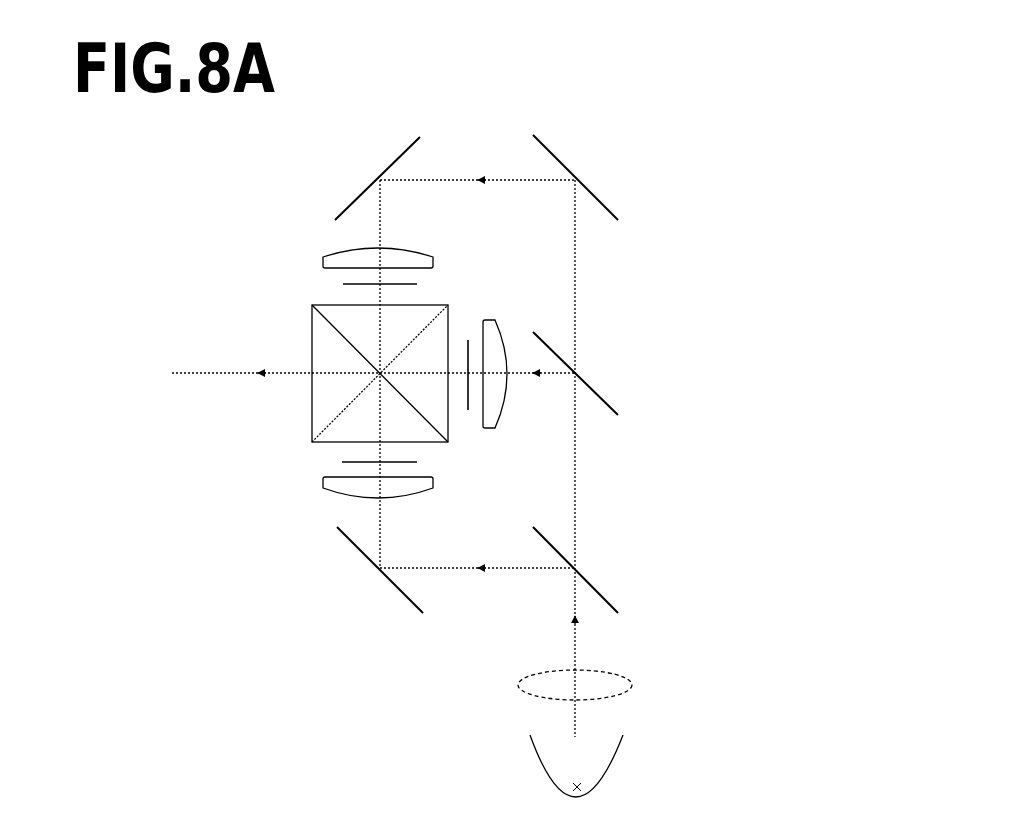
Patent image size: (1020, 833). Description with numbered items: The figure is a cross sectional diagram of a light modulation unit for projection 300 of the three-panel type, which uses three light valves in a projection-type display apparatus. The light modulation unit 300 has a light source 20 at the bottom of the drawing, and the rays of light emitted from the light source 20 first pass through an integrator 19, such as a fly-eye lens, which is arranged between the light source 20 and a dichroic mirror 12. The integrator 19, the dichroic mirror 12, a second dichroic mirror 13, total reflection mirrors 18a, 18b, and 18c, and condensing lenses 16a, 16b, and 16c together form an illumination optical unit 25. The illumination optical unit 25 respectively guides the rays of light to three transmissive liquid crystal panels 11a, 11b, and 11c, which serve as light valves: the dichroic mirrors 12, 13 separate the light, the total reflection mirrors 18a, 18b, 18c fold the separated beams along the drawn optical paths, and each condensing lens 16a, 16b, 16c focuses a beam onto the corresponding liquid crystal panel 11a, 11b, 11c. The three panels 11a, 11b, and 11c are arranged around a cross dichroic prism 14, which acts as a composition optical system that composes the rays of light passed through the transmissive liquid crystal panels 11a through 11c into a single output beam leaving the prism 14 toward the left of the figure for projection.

The light modulation unit for projection 300 is at (596, 76).
The illumination optical unit 25 is at (655, 216).
The total reflection mirror 18a is at (352, 547).
The total reflection mirror 18b is at (603, 200).
The total reflection mirror 18c is at (355, 203).
The dichroic mirror 13 is at (600, 395).
The dichroic mirror 12 is at (602, 592).
The condensing lens 16a is at (415, 500).
The condensing lens 16b is at (505, 407).
The condensing lens 16c is at (415, 248).
The transmissive liquid crystal panel 11a is at (345, 457).
The transmissive liquid crystal panel 11b is at (465, 338).
The transmissive liquid crystal panel 11c is at (342, 285).
The cross dichroic prism 14 is at (318, 403).
The integrator 19 is at (632, 685).
The light source 20 is at (622, 750).